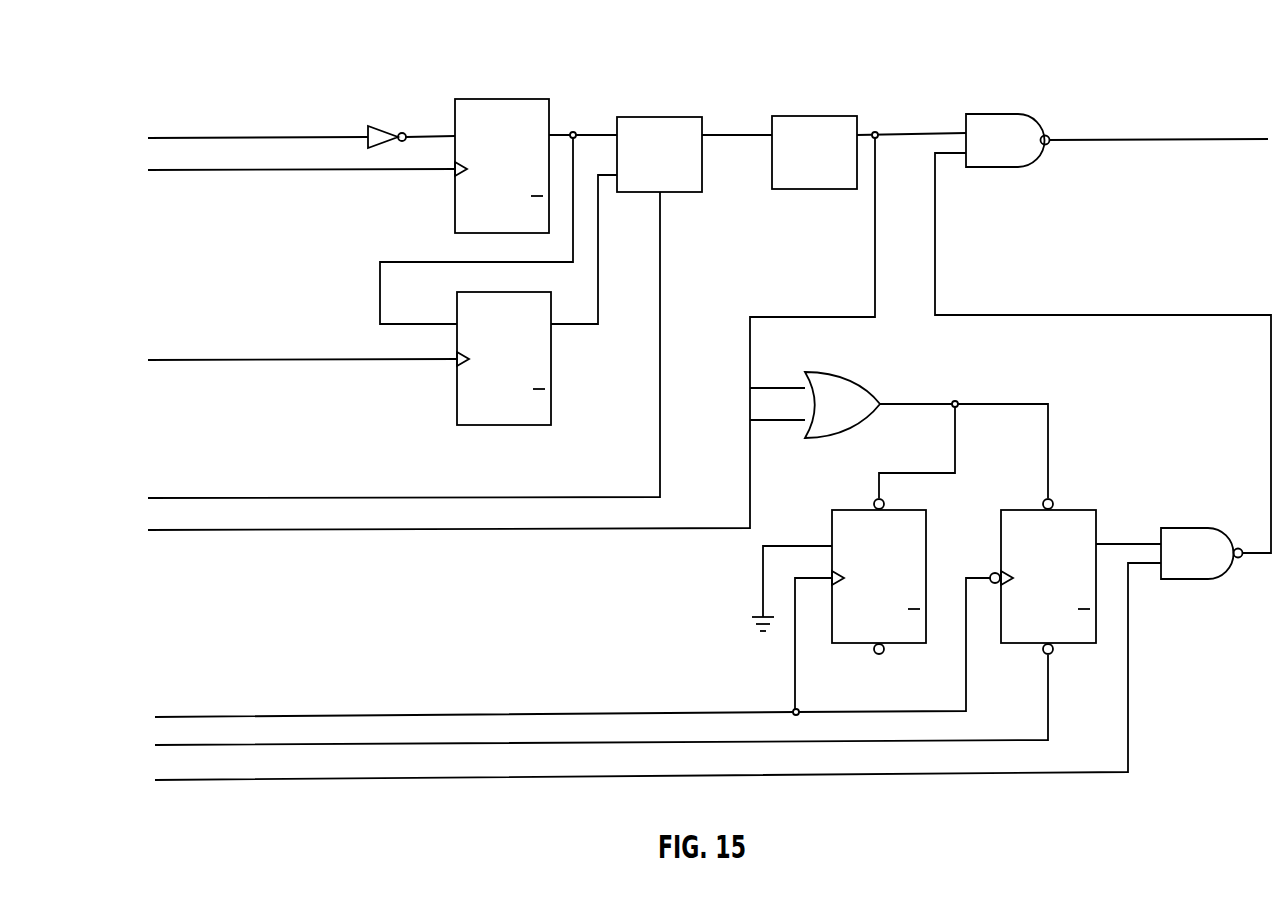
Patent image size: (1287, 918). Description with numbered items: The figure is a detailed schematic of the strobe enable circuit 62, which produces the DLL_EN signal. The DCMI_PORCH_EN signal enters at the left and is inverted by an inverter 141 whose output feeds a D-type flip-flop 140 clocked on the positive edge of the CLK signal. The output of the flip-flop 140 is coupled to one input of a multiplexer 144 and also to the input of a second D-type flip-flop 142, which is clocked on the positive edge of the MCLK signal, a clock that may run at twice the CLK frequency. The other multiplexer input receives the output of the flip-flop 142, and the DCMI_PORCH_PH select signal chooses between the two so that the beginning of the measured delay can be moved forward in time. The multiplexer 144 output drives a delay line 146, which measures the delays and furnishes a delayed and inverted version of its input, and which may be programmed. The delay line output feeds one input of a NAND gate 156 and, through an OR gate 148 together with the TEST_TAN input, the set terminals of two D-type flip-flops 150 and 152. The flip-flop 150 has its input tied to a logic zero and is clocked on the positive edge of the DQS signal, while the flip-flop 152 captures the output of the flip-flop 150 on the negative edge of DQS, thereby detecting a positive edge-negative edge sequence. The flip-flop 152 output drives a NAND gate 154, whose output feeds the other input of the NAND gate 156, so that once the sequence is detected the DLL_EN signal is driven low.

The strobe enable circuit 62 is at (444, 67).
The D-type flip-flop 140 is at (508, 148).
The inverter 141 is at (403, 122).
The D-type flip-flop 142 is at (532, 358).
The multiplexer 144 is at (666, 138).
The delay line 146 is at (821, 136).
The OR gate 148 is at (854, 390).
The D-type flip-flop 150 is at (896, 565).
The D-type flip-flop 152 is at (1060, 565).
The NAND gate 154 is at (1202, 536).
The NAND gate 156 is at (1008, 124).